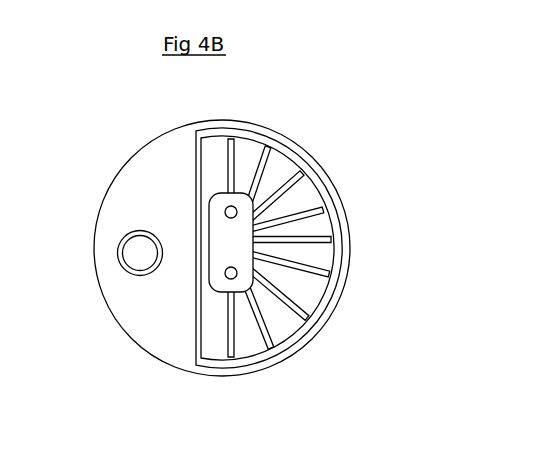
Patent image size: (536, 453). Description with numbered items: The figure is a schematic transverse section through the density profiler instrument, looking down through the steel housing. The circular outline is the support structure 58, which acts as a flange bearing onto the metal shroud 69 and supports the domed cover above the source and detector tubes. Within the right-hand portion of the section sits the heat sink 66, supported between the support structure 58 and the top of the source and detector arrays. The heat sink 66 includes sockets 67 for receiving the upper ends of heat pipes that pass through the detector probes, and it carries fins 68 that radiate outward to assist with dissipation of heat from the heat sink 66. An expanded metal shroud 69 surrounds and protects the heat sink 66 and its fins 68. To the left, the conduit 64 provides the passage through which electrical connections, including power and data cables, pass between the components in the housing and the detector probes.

The support structure 58 is at (157, 158).
The conduit 64 is at (133, 255).
The heat sink 66 is at (238, 248).
The sockets 67 is at (226, 276).
The fins 68 is at (311, 207).
The expanded metal shroud 69 is at (280, 143).